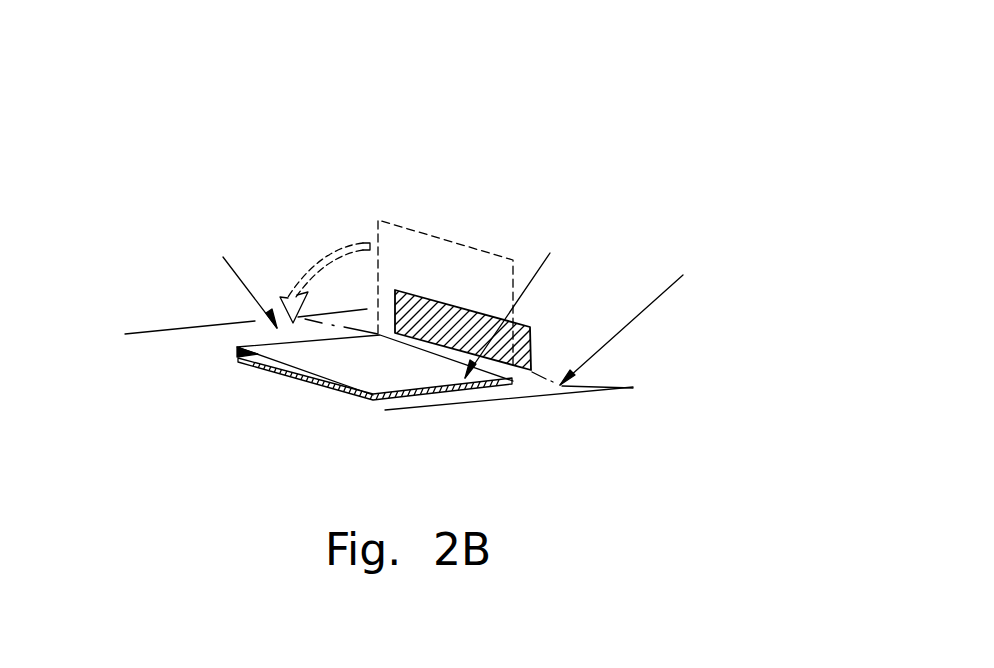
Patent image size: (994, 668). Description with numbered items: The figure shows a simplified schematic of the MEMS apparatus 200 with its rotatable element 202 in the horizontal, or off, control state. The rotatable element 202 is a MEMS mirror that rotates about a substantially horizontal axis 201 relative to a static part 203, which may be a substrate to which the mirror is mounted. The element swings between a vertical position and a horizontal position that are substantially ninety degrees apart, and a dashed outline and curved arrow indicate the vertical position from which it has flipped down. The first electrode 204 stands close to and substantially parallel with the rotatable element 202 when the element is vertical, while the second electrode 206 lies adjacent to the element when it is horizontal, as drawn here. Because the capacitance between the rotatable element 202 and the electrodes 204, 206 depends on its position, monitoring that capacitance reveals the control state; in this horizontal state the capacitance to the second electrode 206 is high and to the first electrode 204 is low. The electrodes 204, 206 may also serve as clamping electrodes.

The apparatus 200 is at (228, 132).
The horizontal axis 201 is at (577, 393).
The rotatable element 202 is at (249, 347).
The static part 203 is at (142, 331).
The first electrode 204 is at (537, 356).
The second electrode 206 is at (330, 386).